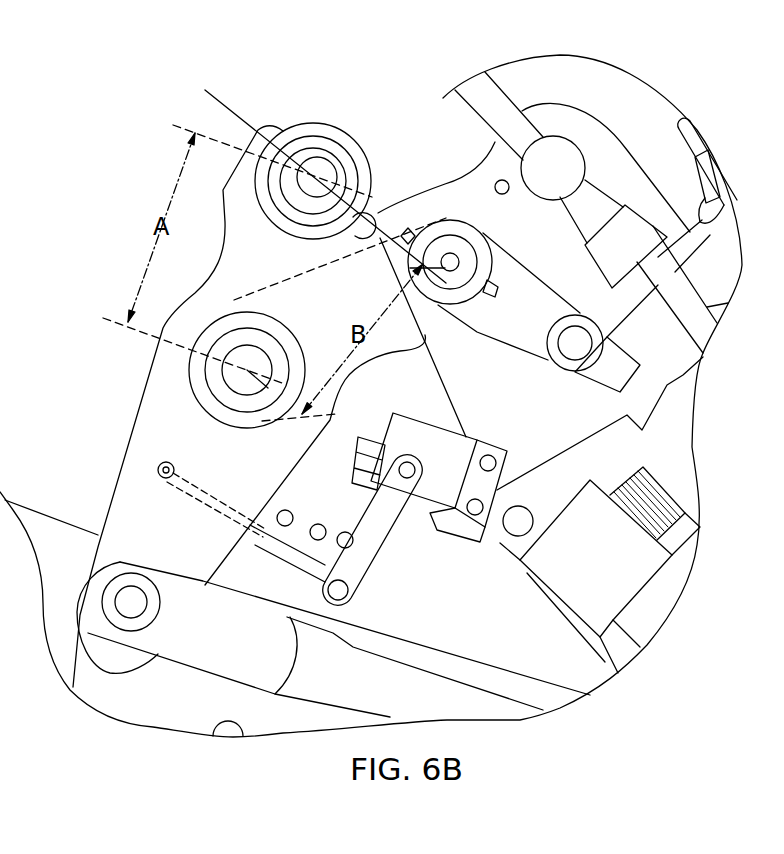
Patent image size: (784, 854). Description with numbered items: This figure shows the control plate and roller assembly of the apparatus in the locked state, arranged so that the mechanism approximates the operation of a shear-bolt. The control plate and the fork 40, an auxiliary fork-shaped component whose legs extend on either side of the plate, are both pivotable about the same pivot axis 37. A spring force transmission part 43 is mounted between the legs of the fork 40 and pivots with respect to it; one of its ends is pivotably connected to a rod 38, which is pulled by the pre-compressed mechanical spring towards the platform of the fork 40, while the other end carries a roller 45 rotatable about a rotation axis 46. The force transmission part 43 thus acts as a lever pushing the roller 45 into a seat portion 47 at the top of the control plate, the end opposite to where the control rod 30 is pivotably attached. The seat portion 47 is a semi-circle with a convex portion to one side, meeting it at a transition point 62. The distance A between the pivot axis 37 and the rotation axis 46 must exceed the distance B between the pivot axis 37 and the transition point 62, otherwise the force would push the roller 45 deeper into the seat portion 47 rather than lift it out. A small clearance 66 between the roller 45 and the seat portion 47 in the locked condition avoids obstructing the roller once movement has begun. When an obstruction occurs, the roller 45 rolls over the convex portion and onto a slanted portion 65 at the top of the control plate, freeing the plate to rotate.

The control rod 30 is at (393, 672).
The pivot axis 37 is at (190, 378).
The rod 38 is at (618, 320).
The fork 40 is at (558, 248).
The spring force transmission part 43 is at (520, 347).
The roller 45 is at (335, 126).
The rotation axis 46 is at (366, 158).
The seat portion 47 is at (260, 190).
The transition point 62 is at (352, 235).
The slanted portion 65 is at (428, 330).
The clearance 66 is at (300, 112).